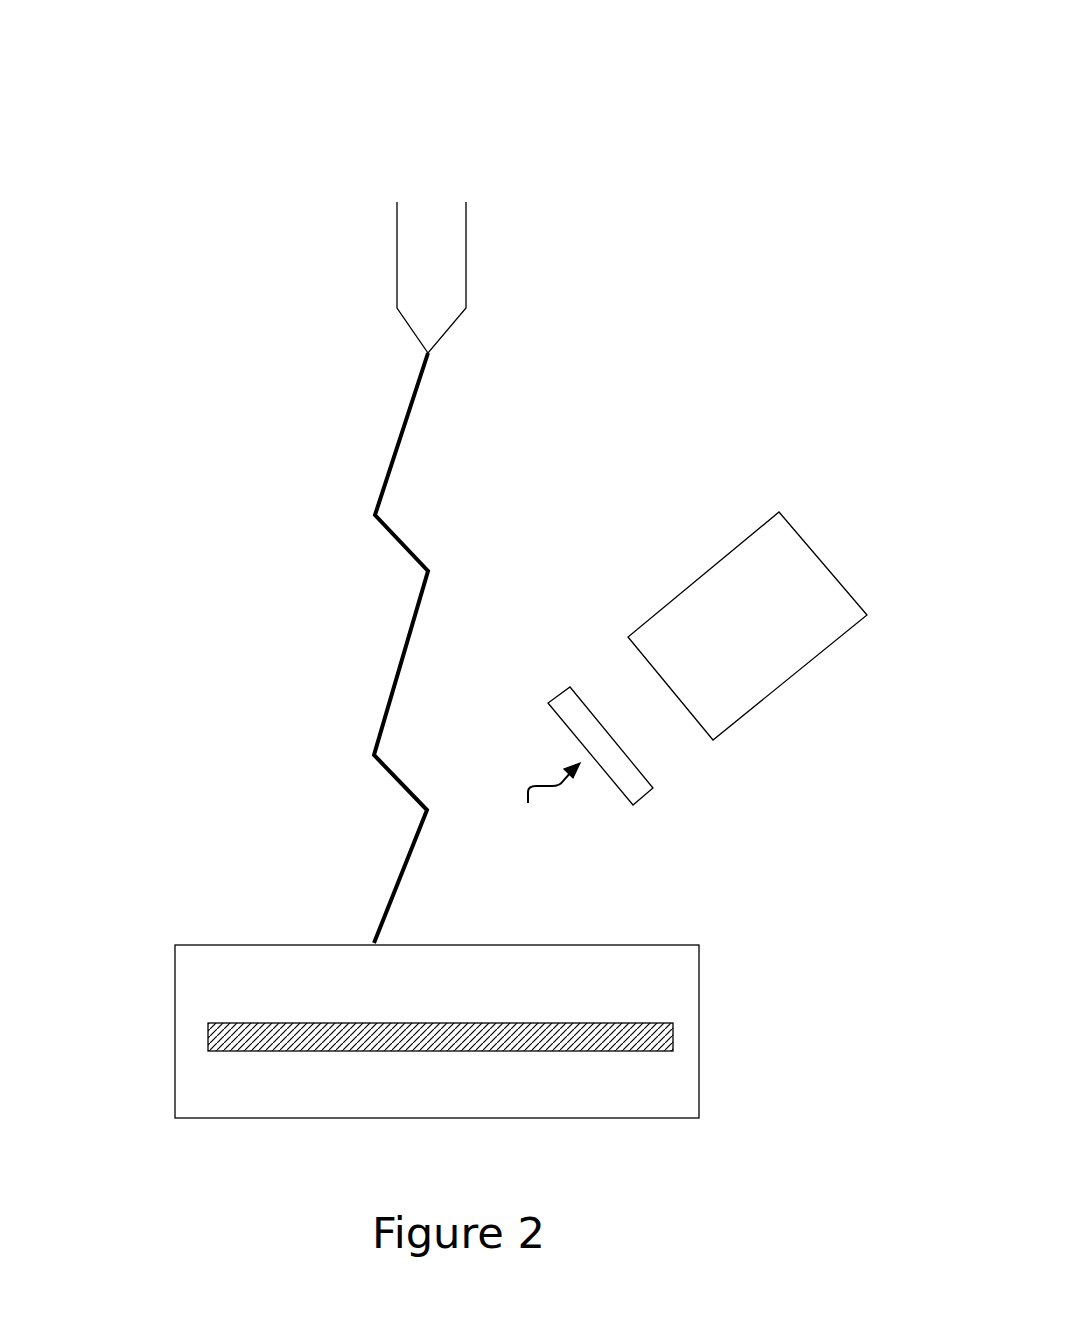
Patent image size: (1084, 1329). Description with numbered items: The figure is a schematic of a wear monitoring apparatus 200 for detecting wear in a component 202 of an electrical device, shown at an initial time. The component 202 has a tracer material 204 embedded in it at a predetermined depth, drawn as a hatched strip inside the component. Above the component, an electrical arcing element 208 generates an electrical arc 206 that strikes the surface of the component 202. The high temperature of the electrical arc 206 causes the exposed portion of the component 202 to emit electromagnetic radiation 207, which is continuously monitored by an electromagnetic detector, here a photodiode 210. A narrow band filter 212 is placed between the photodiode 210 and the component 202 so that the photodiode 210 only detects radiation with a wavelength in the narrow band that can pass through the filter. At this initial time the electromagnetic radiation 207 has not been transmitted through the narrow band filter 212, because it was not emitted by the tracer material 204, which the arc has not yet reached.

The apparatus 200 is at (302, 250).
The component 202 is at (699, 947).
The tracer material 204 is at (673, 1053).
The electrical arc 206 is at (385, 478).
The electromagnetic radiation 207 is at (560, 787).
The electrical arcing element 208 is at (466, 275).
The photodiode 210 is at (805, 538).
The narrow band filter 212 is at (557, 690).